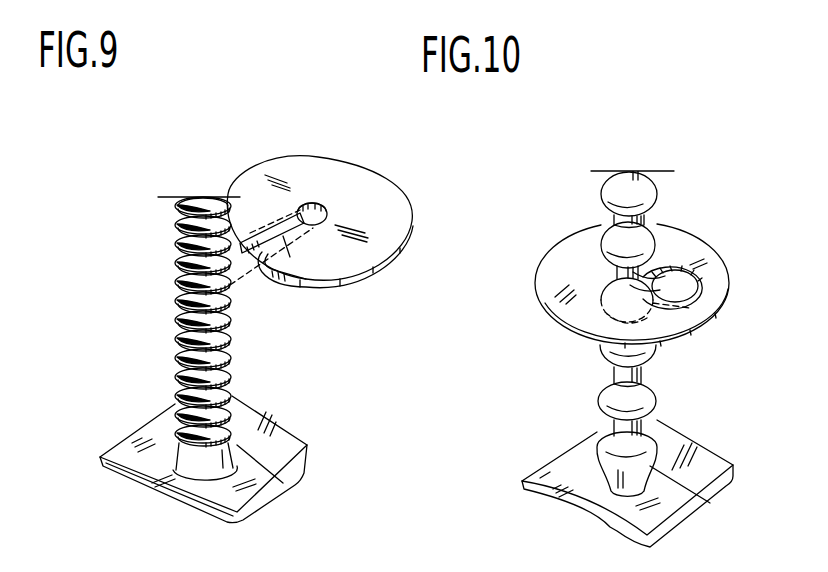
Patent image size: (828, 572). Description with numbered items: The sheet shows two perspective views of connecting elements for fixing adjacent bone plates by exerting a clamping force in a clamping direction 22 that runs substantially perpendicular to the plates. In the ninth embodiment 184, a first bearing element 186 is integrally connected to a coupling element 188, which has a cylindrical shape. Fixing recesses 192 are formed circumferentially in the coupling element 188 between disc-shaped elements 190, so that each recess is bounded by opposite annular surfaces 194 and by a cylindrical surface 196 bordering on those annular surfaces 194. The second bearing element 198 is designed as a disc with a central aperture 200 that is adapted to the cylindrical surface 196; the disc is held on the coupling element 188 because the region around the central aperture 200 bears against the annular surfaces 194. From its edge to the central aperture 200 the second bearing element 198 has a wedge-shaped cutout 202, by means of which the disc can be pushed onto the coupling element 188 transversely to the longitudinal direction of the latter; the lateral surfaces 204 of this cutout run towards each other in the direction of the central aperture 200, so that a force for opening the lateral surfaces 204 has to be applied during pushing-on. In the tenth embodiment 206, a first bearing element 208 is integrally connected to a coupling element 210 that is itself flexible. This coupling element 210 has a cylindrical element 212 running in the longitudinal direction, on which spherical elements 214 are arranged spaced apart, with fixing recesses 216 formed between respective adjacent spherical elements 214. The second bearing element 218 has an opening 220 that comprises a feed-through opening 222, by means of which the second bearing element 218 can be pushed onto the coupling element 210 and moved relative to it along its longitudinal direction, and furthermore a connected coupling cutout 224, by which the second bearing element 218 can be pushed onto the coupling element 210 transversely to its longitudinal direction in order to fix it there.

In FIG. 9, the clamping direction 22 is at (203, 152).
In FIG. 10, the clamping direction 22 is at (506, 449).
In FIG. 9, the ninth embodiment 184 is at (100, 172).
In FIG. 9, the first bearing element 186 is at (144, 504).
In FIG. 9, the coupling element 188 is at (166, 247).
In FIG. 9, the disc-shaped elements 190 is at (183, 272).
In FIG. 9, the fixing recesses 192 is at (185, 296).
In FIG. 9, the annular surfaces 194 is at (187, 324).
In FIG. 9, the cylindrical surface 196 is at (190, 351).
In FIG. 9, the second bearing element 198 is at (392, 168).
In FIG. 9, the central aperture 200 is at (328, 215).
In FIG. 9, the wedge-shaped cutout 202 is at (257, 257).
In FIG. 9, the lateral surfaces 204 is at (325, 284).
In FIG. 10, the tenth embodiment 206 is at (715, 166).
In FIG. 10, the first bearing element 208 is at (538, 511).
In FIG. 10, the coupling element 210 is at (622, 178).
In FIG. 10, the cylindrical element 212 is at (617, 220).
In FIG. 10, the spherical elements 214 is at (611, 240).
In FIG. 10, the fixing recesses 216 is at (611, 370).
In FIG. 10, the second bearing element 218 is at (530, 246).
In FIG. 10, the opening 220 is at (688, 264).
In FIG. 10, the feed-through opening 222 is at (690, 306).
In FIG. 10, the coupling cutout 224 is at (606, 285).